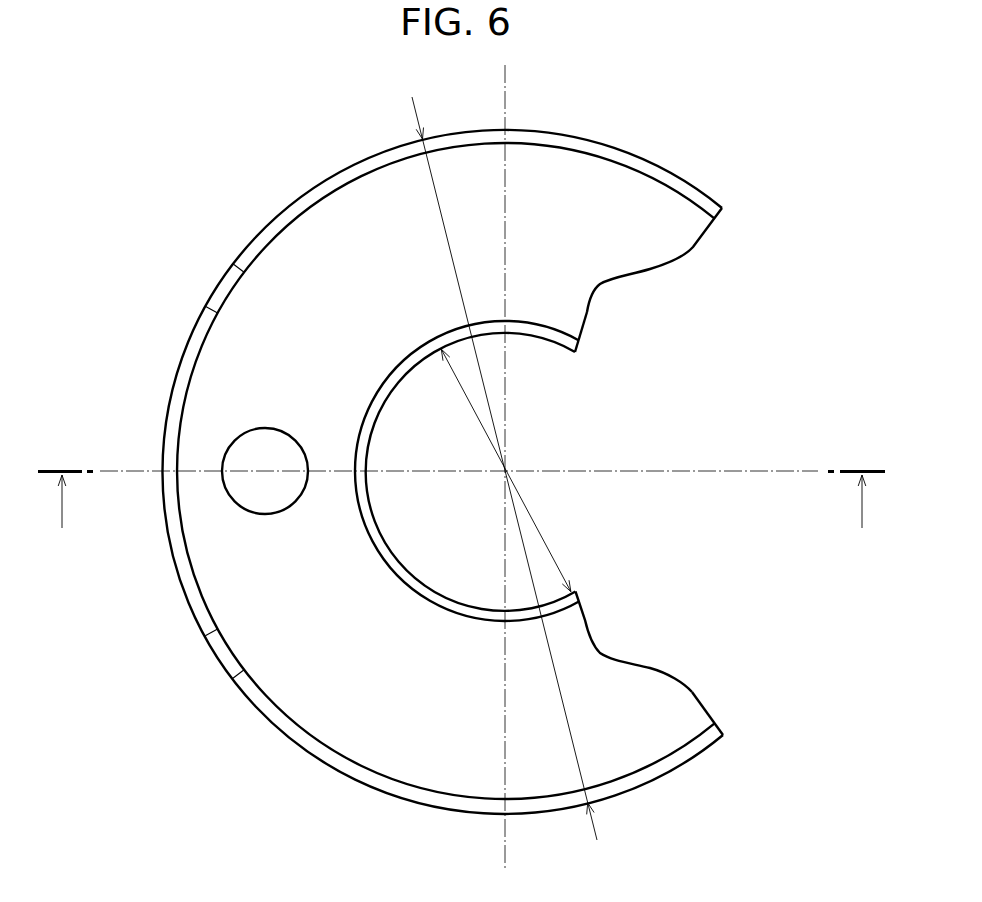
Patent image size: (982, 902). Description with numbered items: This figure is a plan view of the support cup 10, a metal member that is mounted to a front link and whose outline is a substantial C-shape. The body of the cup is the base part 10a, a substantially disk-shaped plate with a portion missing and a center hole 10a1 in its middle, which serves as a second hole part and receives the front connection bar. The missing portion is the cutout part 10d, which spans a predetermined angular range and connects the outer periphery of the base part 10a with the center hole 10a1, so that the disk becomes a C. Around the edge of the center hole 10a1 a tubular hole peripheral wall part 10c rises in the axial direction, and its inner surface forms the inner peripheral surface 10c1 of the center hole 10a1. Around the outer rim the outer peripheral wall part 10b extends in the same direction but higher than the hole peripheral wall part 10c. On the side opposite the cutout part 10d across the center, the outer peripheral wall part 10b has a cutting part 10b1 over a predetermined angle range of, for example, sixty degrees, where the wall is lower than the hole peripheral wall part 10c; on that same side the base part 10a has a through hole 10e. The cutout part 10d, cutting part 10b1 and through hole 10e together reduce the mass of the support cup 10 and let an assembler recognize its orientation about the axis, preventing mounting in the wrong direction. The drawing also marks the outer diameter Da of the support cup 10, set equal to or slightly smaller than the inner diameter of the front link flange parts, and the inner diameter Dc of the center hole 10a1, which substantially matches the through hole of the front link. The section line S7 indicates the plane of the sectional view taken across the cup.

The support cup 10 is at (302, 196).
The base part 10a is at (593, 693).
The center hole 10a1 is at (390, 402).
The outer peripheral wall part 10b is at (290, 740).
The cutting part 10b1 is at (212, 645).
The hole peripheral wall part 10c is at (540, 320).
The inner peripheral surface 10c1 is at (530, 333).
The cutout part 10d is at (692, 690).
The through hole 10e is at (222, 468).
The outer diameter Da is at (526, 468).
The inner diameter Dc is at (510, 470).
The section line S7 is at (461, 516).